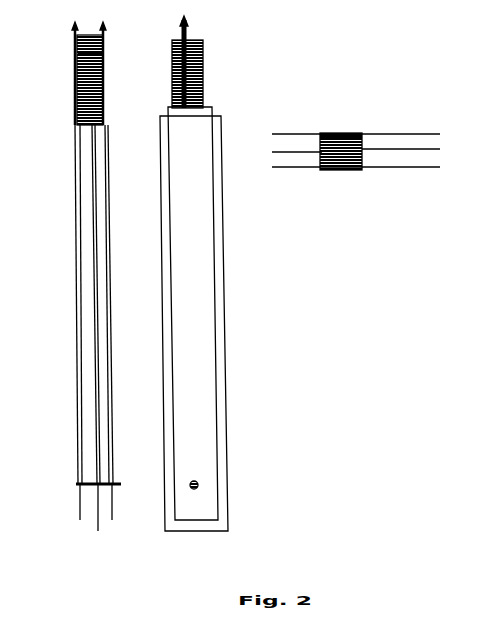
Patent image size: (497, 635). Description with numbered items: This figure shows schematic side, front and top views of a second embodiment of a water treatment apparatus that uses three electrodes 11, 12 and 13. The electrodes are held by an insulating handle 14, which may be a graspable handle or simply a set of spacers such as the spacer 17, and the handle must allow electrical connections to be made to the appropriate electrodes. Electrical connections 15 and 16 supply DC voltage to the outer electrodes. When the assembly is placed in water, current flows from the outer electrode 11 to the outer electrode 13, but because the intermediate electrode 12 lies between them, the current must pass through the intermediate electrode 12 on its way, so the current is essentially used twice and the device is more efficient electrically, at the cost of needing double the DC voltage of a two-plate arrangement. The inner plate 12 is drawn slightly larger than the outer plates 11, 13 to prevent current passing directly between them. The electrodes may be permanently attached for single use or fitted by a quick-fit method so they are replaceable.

The electrode 11 is at (75, 203).
The intermediate electrode 12 is at (80, 232).
The electrode 13 is at (97, 258).
The insulating handle 14 is at (76, 89).
The electrical connection 15 is at (75, 32).
The electrical connection 16 is at (78, 53).
The spacer 17 is at (200, 485).